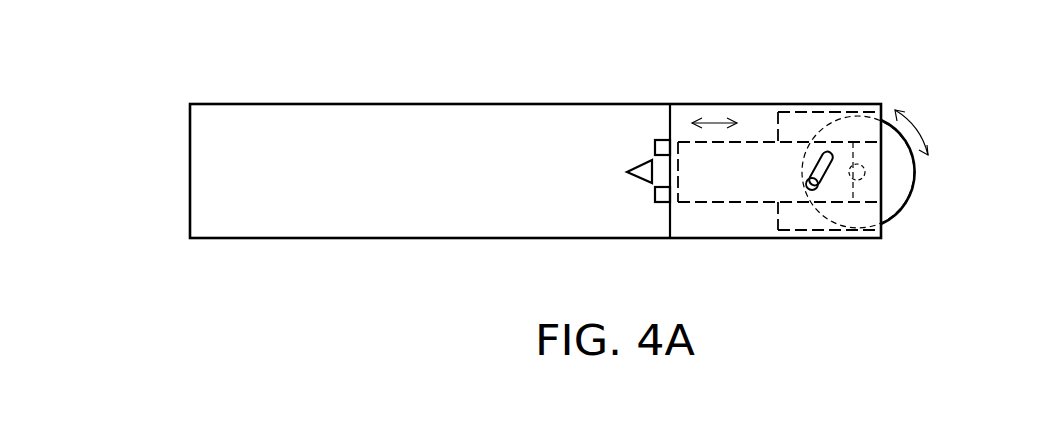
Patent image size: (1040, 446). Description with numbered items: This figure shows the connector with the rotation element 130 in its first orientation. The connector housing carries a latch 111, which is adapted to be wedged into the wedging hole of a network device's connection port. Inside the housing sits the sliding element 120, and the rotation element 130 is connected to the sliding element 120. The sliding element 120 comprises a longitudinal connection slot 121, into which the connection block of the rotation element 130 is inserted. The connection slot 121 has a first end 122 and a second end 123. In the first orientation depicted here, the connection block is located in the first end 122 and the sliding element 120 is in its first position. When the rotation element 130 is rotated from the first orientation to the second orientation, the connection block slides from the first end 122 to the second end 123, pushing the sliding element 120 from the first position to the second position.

The latch 111 is at (640, 178).
The sliding element 120 is at (718, 188).
The connection slot 121 is at (813, 143).
The first end 122 is at (815, 195).
The second end 123 is at (822, 148).
The rotation element 130 is at (900, 172).